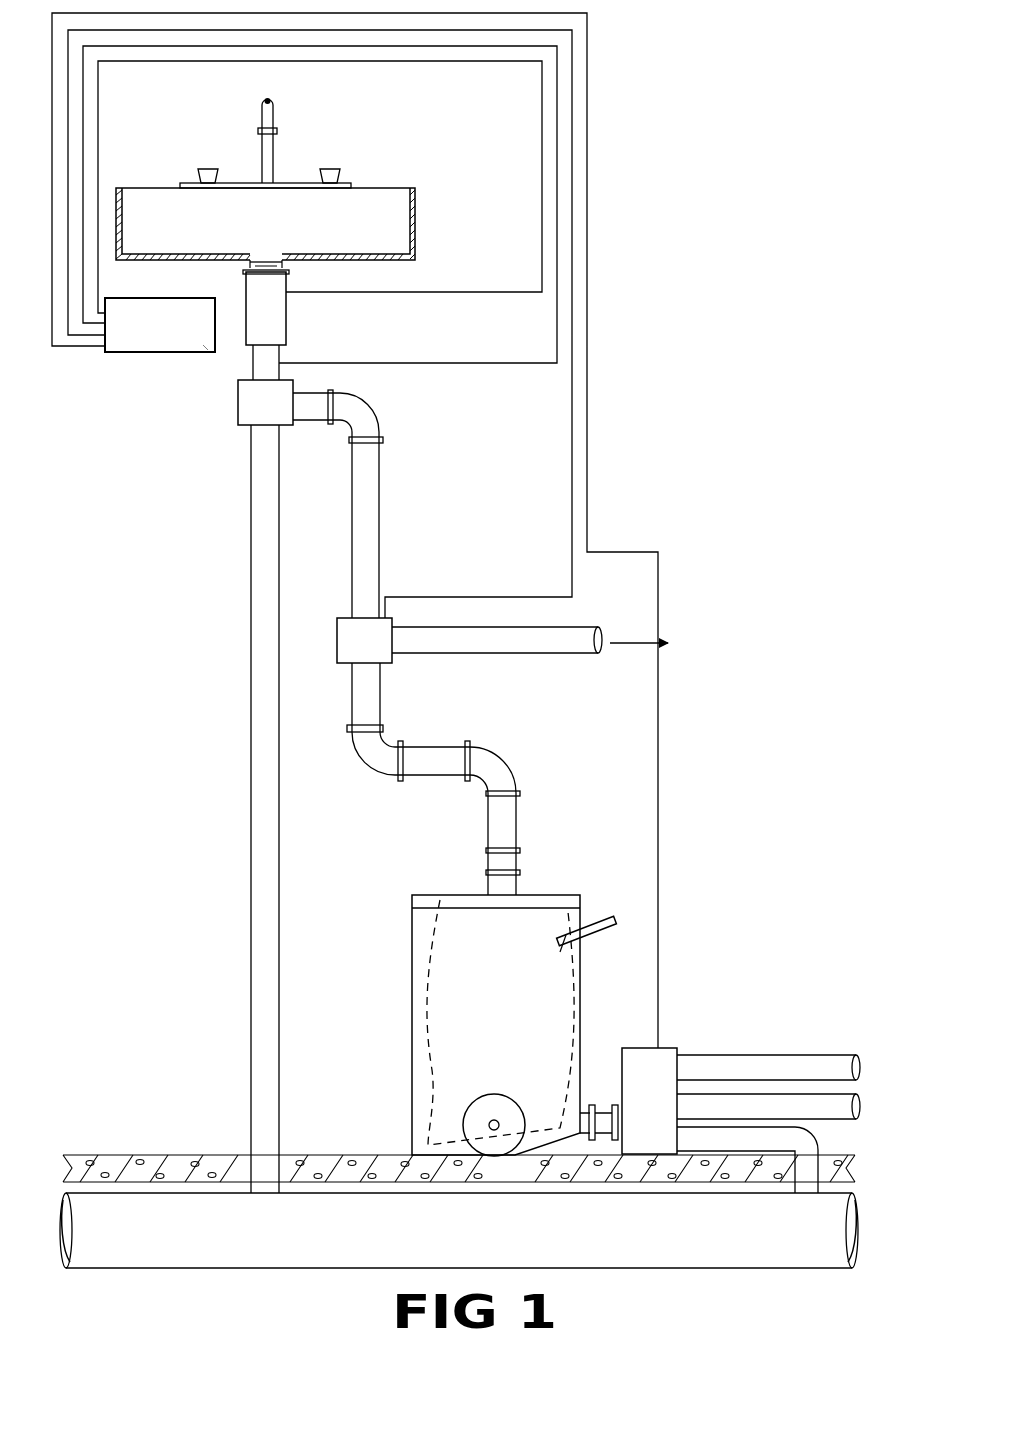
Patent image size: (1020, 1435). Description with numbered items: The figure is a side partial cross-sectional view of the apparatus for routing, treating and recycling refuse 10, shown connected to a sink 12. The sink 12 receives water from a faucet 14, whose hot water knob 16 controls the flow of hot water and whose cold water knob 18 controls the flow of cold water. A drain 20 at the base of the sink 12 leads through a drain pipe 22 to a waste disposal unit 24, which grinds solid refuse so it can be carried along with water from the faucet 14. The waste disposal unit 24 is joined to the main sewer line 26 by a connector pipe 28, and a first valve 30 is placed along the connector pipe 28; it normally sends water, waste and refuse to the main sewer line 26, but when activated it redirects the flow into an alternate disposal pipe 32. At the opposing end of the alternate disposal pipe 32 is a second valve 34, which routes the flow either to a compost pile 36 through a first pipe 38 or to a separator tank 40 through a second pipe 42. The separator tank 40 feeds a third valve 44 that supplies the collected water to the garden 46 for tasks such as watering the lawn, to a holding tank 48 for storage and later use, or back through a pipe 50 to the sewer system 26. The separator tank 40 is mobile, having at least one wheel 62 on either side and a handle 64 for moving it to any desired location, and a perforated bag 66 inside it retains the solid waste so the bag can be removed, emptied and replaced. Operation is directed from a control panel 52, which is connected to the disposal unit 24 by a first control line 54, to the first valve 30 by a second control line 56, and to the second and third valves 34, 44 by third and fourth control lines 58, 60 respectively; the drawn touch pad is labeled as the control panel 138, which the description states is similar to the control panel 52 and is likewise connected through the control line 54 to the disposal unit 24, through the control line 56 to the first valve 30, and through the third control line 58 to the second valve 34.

The apparatus for routing, treating and recycling refuse 10 is at (630, 188).
The sink 12 is at (388, 198).
The faucet 14 is at (268, 108).
The hot water knob 16 is at (203, 168).
The cold water knob 18 is at (330, 176).
The drain 20 is at (262, 260).
The drain pipe 22 is at (283, 263).
The waste disposal unit 24 is at (275, 317).
The main sewer line 26 is at (219, 1243).
The connector pipe 28 is at (262, 360).
The first valve 30 is at (281, 421).
The alternate disposal pipe 32 is at (385, 498).
The second valve 34 is at (379, 659).
The compost pile 36 is at (706, 665).
The first pipe 38 is at (500, 651).
The separator tank 40 is at (420, 922).
The second pipe 42 is at (520, 815).
The third valve 44 is at (664, 1119).
The garden 46 is at (810, 1064).
The holding tank 48 is at (855, 1108).
The pipe 50 is at (805, 1143).
The control panel 52 is at (128, 362).
The first control line 54 is at (490, 292).
The second control line 56 is at (491, 363).
The third control line 58 is at (571, 487).
The fourth control line 60 is at (659, 602).
The wheel 62 is at (497, 1108).
The handle 64 is at (609, 918).
The perforated bag 66 is at (504, 1034).
The control panel 138 is at (203, 346).